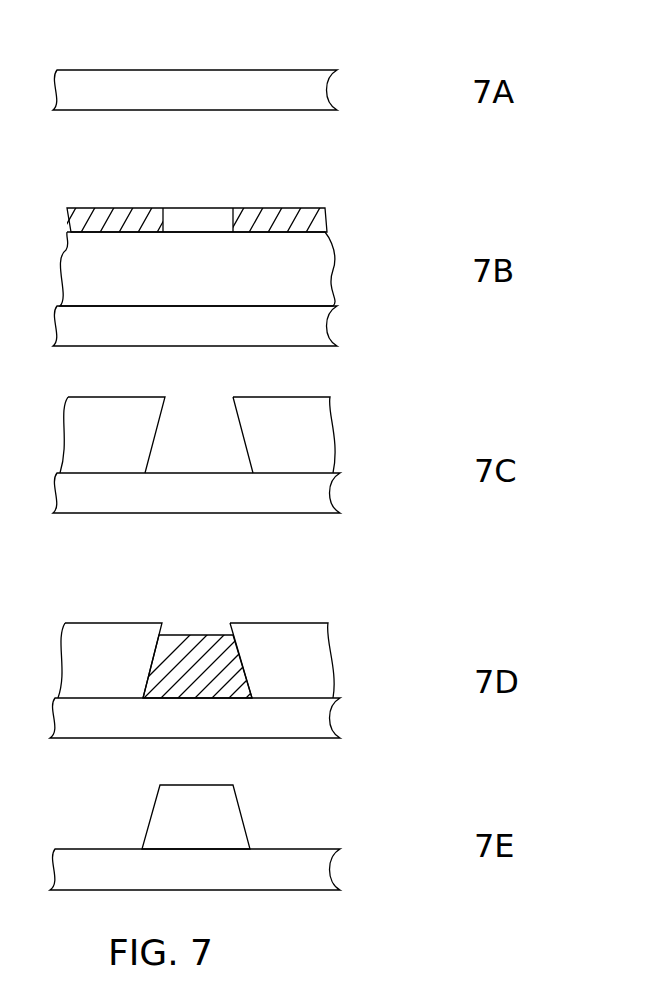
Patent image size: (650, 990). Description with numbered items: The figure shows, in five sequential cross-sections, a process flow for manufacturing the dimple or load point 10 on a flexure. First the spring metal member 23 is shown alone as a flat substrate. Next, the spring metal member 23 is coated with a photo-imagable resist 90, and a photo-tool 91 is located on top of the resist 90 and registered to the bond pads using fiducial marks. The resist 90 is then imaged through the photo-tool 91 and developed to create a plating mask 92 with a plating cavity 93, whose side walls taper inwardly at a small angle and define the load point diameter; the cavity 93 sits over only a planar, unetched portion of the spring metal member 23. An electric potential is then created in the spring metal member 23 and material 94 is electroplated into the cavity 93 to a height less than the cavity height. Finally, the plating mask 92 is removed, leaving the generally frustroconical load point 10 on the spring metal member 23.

The load point 10 is at (227, 817).
The spring metal member 23 is at (283, 65).
The photo-imagable resist 90 is at (252, 258).
The photo-tool 91 is at (257, 209).
The plating mask 92 is at (305, 395).
The plating cavity 93 is at (197, 435).
The material 94 is at (193, 632).